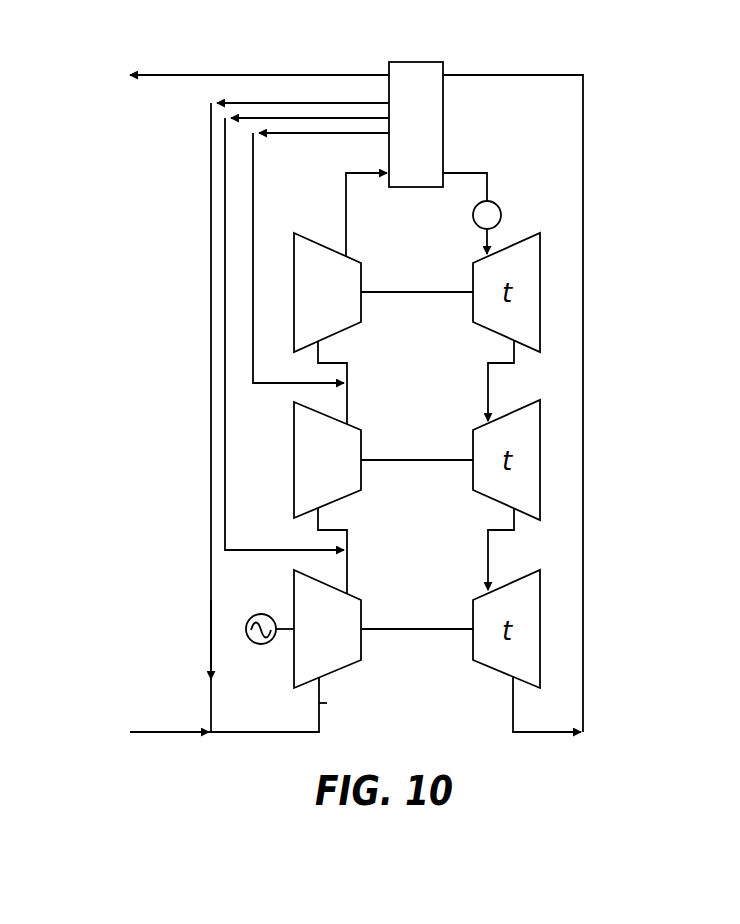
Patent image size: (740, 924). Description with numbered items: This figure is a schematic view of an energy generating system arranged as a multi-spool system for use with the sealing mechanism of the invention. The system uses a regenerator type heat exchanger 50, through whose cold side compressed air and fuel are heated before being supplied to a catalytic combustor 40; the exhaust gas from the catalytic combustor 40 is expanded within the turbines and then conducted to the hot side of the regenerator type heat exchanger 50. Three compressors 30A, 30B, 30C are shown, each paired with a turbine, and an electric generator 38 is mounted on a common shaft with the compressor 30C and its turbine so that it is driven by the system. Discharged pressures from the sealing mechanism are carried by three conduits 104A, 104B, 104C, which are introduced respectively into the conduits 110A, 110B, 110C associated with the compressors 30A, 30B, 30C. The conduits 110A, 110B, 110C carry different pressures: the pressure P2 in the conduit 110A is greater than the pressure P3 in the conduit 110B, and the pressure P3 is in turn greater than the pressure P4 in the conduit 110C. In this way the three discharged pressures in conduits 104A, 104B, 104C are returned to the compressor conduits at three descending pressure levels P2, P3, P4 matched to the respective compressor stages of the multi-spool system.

The regenerator type heat exchanger 50 is at (443, 62).
The catalytic combustor 40 is at (501, 212).
The conduit 104A is at (253, 245).
The conduit 104B is at (225, 172).
The conduit 104C is at (211, 143).
The compressor 30A is at (305, 302).
The compressor 30B is at (305, 470).
The compressor 30C is at (305, 639).
The conduit 110A is at (318, 353).
The conduit 110B is at (318, 522).
The conduit 110C is at (327, 703).
The electric generator 38 is at (246, 627).
The pressure P2 is at (368, 385).
The pressure P3 is at (368, 554).
The pressure P4 is at (343, 724).